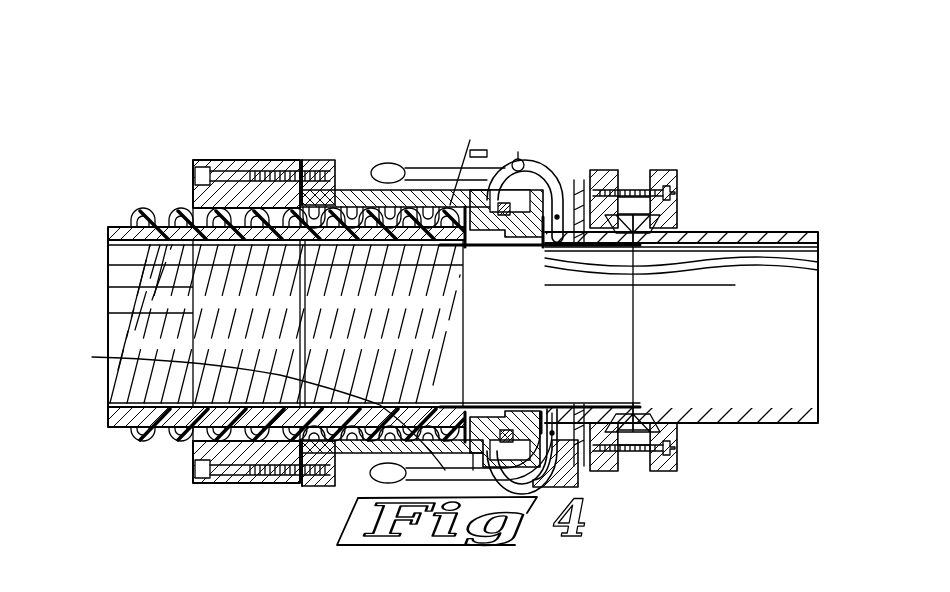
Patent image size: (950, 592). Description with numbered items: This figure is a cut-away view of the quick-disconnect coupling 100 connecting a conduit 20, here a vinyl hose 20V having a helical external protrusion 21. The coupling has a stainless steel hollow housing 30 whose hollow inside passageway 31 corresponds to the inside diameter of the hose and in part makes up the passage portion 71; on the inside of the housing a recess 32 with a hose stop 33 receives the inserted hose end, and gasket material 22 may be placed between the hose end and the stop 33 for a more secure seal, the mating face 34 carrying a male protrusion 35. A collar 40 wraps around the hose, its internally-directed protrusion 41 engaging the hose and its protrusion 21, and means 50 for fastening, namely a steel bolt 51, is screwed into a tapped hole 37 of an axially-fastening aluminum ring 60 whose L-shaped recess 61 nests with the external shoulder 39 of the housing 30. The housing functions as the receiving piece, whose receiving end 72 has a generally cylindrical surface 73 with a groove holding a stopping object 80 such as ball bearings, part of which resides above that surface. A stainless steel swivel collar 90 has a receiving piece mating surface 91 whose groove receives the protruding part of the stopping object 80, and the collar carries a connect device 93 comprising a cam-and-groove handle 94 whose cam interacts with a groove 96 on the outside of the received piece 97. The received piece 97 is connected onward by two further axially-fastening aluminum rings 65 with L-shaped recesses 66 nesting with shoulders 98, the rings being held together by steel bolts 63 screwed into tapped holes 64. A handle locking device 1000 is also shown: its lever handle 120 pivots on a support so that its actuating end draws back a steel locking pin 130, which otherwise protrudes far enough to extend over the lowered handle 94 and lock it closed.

The conduit 20 is at (78, 240).
The vinyl hose 20V is at (74, 269).
The helical external protrusion 21 is at (147, 210).
The gasket material 22 is at (690, 235).
The hollow housing 30 is at (405, 190).
The hollow inside passageway 31 is at (600, 190).
The recess 32 is at (488, 190).
The hose stop 33 is at (473, 413).
The mating face 34 is at (650, 285).
The male protrusion 35 is at (583, 180).
The tapped hole 37 is at (470, 140).
The external shoulder 39 is at (458, 135).
The collar 40 is at (233, 160).
The internally-directed protrusion 41 is at (193, 173).
The means for fastening 50 is at (335, 172).
The steel bolt 51 is at (187, 172).
The axially-fastening aluminum ring 60 is at (318, 162).
The L-shaped recess 61 is at (302, 160).
The steel bolts 63 is at (678, 190).
The tapped holes 64 is at (603, 175).
The axially-fastening aluminum rings 65 is at (673, 175).
The L-shaped recesses 66 is at (618, 405).
The passage portion 71 is at (777, 155).
The receiving end 72 is at (500, 250).
The generally cylindrical surface 73 is at (570, 417).
The stopping object 80 is at (545, 158).
The swivel collar 90 is at (578, 235).
The receiving piece mating surface 91 is at (590, 402).
The connect device 93 is at (538, 160).
The cam-and-groove handle 94 is at (247, 406).
The groove 96 is at (553, 408).
The received piece 97 is at (610, 403).
The shoulders 98 is at (680, 240).
The coupling 100 is at (172, 118).
The lever handle 120 is at (505, 160).
The locking pin 130 is at (536, 160).
The handle locking device 1000 is at (613, 58).